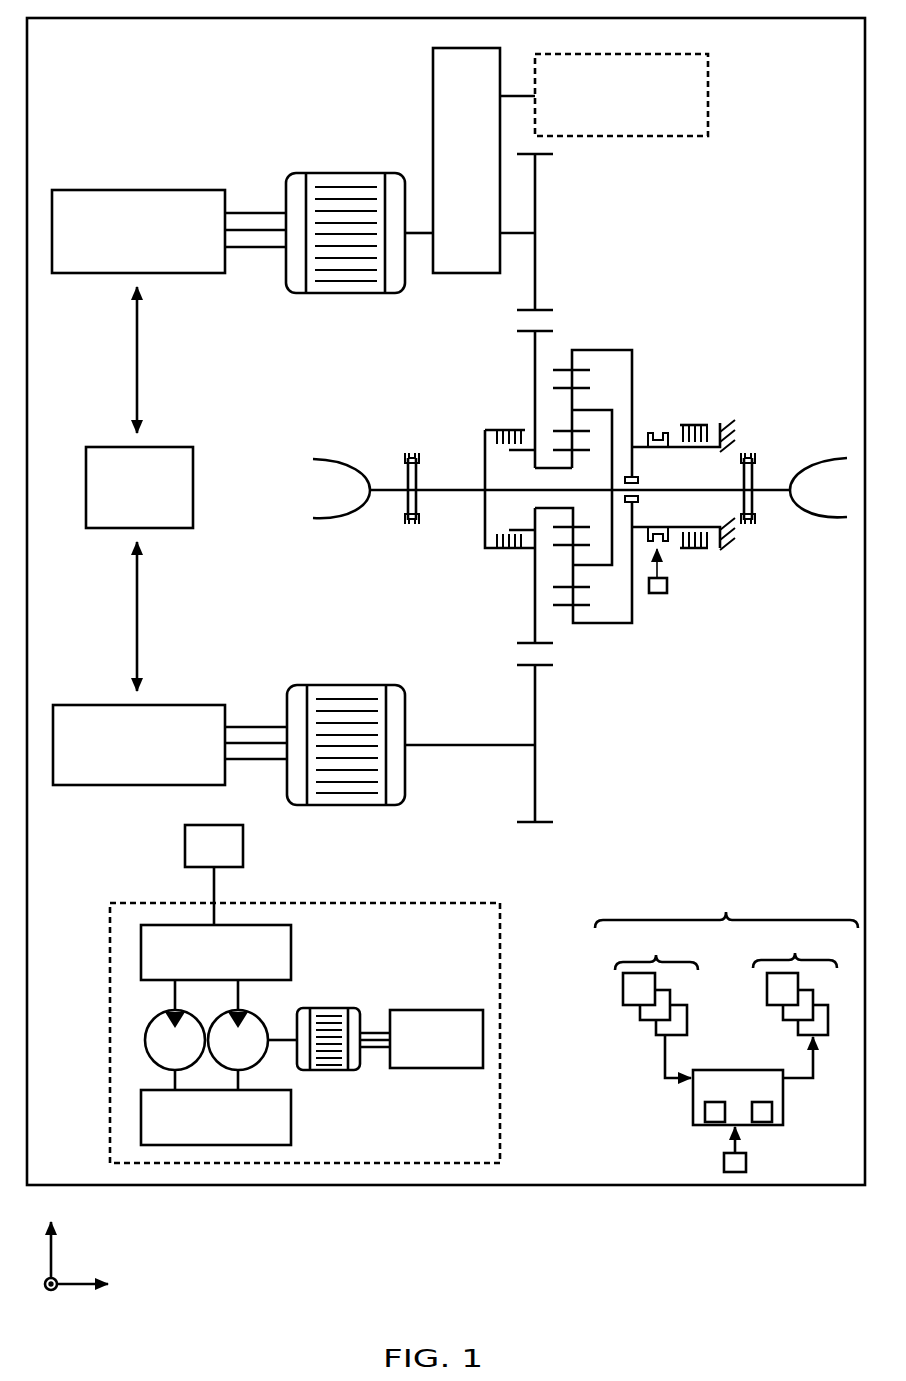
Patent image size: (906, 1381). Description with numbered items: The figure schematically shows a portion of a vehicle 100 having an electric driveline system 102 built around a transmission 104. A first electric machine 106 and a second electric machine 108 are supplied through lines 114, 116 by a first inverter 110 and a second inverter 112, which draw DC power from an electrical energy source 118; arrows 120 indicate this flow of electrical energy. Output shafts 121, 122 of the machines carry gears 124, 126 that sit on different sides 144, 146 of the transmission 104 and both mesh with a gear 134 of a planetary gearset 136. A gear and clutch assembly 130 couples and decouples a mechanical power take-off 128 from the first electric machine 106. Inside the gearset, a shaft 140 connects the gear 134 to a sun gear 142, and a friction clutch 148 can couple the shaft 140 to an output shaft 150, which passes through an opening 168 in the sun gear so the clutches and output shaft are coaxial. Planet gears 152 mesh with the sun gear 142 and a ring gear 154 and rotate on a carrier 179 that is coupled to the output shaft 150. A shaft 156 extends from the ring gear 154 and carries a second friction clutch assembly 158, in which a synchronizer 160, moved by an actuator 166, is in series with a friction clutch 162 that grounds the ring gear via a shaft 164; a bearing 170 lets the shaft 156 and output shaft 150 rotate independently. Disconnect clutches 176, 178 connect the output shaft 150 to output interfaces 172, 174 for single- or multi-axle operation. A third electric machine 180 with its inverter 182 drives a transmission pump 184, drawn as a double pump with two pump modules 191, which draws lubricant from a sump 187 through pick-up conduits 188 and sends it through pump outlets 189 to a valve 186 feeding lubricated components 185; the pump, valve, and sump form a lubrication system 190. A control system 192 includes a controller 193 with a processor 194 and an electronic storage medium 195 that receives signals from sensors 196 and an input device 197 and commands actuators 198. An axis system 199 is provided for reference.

The vehicle 100 is at (36, 18).
The electric driveline system 102 is at (103, 82).
The transmission 104 is at (812, 128).
The first electric machine 106 is at (316, 173).
The second electric machine 108 is at (317, 685).
The first inverter 110 is at (56, 190).
The second inverter 112 is at (56, 705).
The line 114 is at (257, 193).
The line 116 is at (258, 705).
The electrical energy source 118 is at (86, 495).
The arrows 120 is at (137, 310).
The output shaft 121 is at (424, 236).
The output shaft 122 is at (472, 742).
The gear 124 is at (535, 175).
The gear 126 is at (545, 822).
The mechanical power take-off 128 is at (708, 87).
The gear and clutch assembly 130 is at (433, 80).
The gear 134 is at (526, 327).
The planetary gearset 136 is at (602, 345).
The shaft 140 is at (535, 358).
The sun gear 142 is at (604, 525).
The side 144 is at (677, 250).
The side 146 is at (641, 749).
The friction clutch 148 is at (510, 426).
The output shaft 150 is at (462, 488).
The planet gears 152 is at (573, 572).
The ring gear 154 is at (560, 605).
The shaft 156 is at (633, 608).
The second friction clutch assembly 158 is at (683, 360).
The synchronizer 160 is at (657, 428).
The friction clutch 162 is at (700, 420).
The shaft 164 is at (673, 527).
The actuator 166 is at (667, 578).
The opening 168 is at (548, 480).
The bearing 170 is at (640, 478).
The output interface 172 is at (327, 455).
The output interface 174 is at (835, 457).
The disconnect clutch 176 is at (413, 450).
The disconnect clutch 178 is at (752, 448).
The carrier 179 is at (598, 565).
The third electric machine 180 is at (328, 1008).
The inverter 182 is at (392, 1010).
The transmission pump 184 is at (130, 1037).
The components 185 is at (243, 845).
The valve 186 is at (315, 945).
The sump 187 is at (291, 1135).
The pick-up conduits 188 is at (240, 1072).
The pump outlets 189 is at (175, 996).
The lubrication system 190 is at (122, 903).
The pump modules 191 is at (268, 1025).
The control system 192 is at (726, 908).
The controller 193 is at (755, 1100).
The processor 194 is at (705, 1112).
The electronic storage medium 195 is at (772, 1112).
The sensors 196 is at (656, 1004).
The input device 197 is at (746, 1162).
The actuators 198 is at (795, 1004).
The axis system 199 is at (77, 1262).